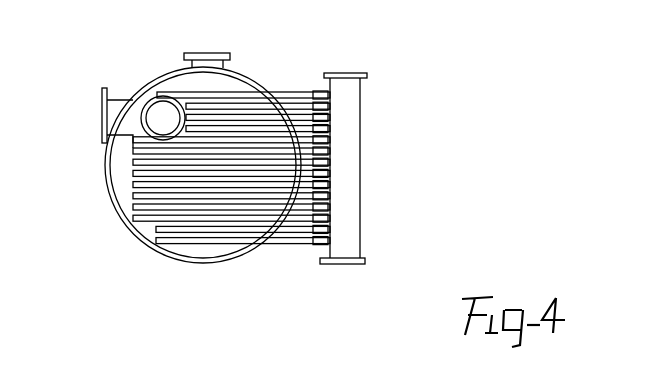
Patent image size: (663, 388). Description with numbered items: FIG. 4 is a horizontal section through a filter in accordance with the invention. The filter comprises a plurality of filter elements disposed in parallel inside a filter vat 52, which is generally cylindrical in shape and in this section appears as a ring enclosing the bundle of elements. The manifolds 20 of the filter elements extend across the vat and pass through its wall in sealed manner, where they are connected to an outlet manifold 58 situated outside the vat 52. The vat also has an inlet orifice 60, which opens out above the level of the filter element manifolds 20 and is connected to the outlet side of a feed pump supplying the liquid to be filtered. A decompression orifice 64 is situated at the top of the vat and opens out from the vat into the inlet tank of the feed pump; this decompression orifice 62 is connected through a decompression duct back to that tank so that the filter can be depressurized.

The filter element manifold 20 is at (133, 203).
The filter vat 52 is at (204, 263).
The outlet manifold 58 is at (350, 137).
The inlet orifice 60 is at (212, 57).
The decompression orifice 62 is at (102, 118).
The decompression orifice 64 is at (158, 115).